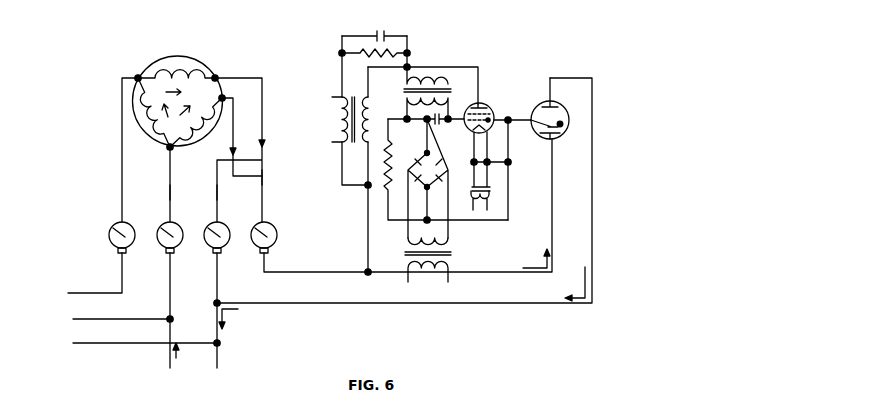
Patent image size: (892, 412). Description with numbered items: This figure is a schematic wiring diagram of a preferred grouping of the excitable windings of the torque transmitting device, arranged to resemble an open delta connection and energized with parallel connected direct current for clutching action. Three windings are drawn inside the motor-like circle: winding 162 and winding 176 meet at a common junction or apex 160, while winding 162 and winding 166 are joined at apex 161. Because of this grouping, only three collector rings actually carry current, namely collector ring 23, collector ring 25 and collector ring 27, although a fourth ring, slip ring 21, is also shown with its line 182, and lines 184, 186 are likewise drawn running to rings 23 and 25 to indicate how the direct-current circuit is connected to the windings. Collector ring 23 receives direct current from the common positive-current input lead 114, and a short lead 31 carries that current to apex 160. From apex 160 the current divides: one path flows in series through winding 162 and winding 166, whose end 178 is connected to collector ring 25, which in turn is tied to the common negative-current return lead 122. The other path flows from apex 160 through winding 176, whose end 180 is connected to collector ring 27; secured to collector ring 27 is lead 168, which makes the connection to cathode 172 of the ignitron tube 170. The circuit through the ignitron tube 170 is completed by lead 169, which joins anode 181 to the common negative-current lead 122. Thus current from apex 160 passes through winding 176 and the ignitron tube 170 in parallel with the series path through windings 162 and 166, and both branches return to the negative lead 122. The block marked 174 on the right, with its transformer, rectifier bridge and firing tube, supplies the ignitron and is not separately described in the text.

The slip ring 21 is at (120, 223).
The collector ring 23 is at (168, 223).
The collector ring 25 is at (215, 223).
The collector ring 27 is at (262, 223).
The lead 31 is at (265, 177).
The common positive-current input lead 114 is at (164, 320).
The common negative-current return lead 122 is at (219, 320).
The common junction or apex 160 is at (172, 149).
The apex 161 is at (137, 77).
The winding 162 is at (158, 117).
The winding 166 is at (169, 71).
The lead 168 is at (452, 272).
The lead 169 is at (457, 303).
The ignitron tube 170 is at (570, 107).
The cathode 172 is at (553, 135).
The amplifier 174 is at (527, 258).
The winding 176 is at (201, 121).
The end of winding 166 178 is at (217, 77).
The end of winding 176 180 is at (224, 98).
The anode 181 is at (548, 105).
The line 182 is at (76, 277).
The line 184 is at (104, 320).
The line 186 is at (133, 343).